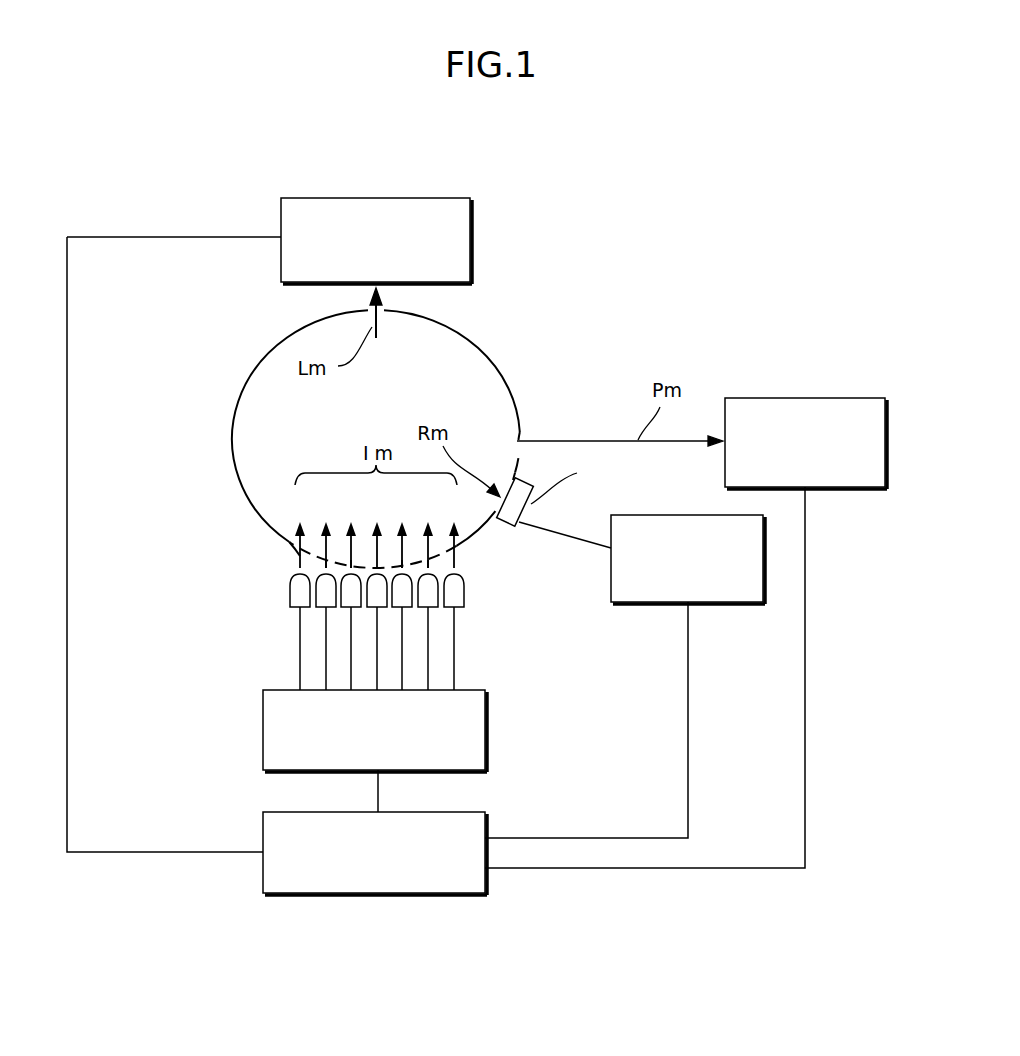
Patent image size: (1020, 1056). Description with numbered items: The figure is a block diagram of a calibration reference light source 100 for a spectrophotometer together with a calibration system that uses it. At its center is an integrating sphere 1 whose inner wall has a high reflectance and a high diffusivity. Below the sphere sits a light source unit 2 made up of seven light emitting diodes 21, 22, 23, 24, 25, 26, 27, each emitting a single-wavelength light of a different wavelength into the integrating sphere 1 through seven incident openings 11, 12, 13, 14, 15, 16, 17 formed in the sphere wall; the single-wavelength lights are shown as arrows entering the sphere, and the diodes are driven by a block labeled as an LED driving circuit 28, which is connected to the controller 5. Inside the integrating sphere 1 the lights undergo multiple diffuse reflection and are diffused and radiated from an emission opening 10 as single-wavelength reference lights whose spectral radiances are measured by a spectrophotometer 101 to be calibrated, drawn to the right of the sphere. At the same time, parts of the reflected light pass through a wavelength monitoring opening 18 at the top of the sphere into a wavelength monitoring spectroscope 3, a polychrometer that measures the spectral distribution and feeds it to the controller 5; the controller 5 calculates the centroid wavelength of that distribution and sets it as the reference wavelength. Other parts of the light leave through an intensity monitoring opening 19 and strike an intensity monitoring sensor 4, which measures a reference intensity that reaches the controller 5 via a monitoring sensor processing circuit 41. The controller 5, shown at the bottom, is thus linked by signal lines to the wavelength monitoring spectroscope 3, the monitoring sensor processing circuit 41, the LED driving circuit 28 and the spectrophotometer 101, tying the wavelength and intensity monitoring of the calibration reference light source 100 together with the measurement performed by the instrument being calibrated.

The integrating sphere 1 is at (240, 390).
The light source unit 2 is at (205, 609).
The wavelength monitoring spectroscope 3 is at (428, 208).
The intensity monitoring sensor 4 is at (522, 478).
The controller 5 is at (476, 882).
The emission opening 10 is at (522, 431).
The incident opening 11 is at (318, 560).
The incident opening 12 is at (320, 567).
The incident opening 13 is at (345, 550).
The incident opening 14 is at (368, 550).
The incident opening 15 is at (409, 550).
The incident opening 16 is at (434, 550).
The incident opening 17 is at (462, 546).
The wavelength monitoring opening 18 is at (385, 313).
The intensity monitoring opening 19 is at (515, 478).
The light emitting diode 21 is at (298, 598).
The light emitting diode 22 is at (324, 598).
The light emitting diode 23 is at (349, 598).
The light emitting diode 24 is at (375, 598).
The light emitting diode 25 is at (404, 598).
The light emitting diode 26 is at (430, 598).
The light emitting diode 27 is at (456, 598).
The LED driving circuit 28 is at (476, 742).
The monitoring sensor processing circuit 41 is at (742, 600).
The calibration reference light source 100 is at (541, 299).
The spectrophotometer to be calibrated 101 is at (805, 400).